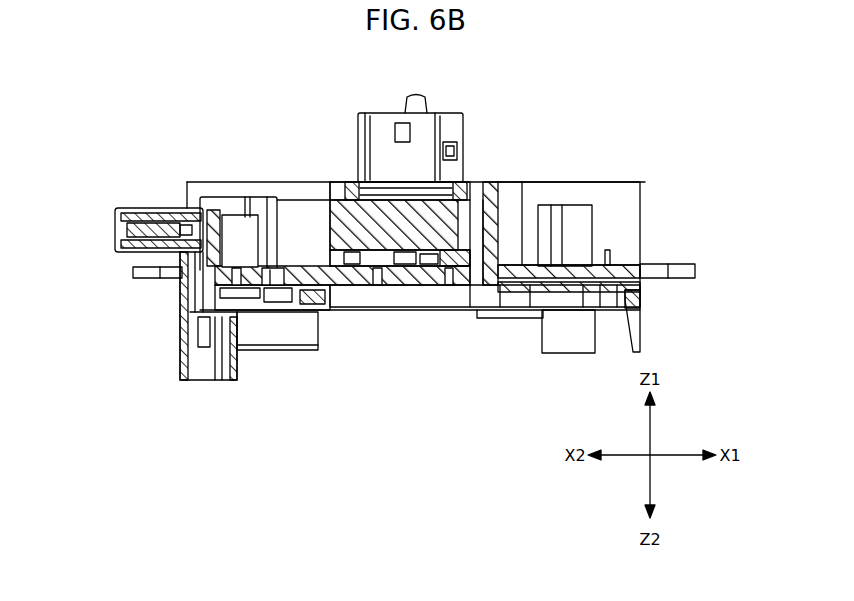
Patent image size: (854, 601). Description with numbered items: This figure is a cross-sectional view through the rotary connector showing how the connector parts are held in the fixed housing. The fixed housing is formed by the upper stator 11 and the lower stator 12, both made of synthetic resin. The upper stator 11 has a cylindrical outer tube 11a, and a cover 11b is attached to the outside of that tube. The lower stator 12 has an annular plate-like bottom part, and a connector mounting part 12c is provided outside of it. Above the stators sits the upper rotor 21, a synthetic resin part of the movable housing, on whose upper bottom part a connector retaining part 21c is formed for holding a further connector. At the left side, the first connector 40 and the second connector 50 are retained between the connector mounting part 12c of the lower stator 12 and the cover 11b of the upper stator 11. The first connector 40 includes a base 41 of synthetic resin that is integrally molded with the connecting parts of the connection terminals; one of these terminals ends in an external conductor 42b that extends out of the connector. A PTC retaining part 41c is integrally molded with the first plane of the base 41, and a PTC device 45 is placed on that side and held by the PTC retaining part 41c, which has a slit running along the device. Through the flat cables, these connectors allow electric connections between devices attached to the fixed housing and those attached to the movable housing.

The upper stator 11 is at (492, 182).
The cylindrical outer tube 11a is at (630, 215).
The cover 11b is at (278, 262).
The lower stator 12 is at (518, 282).
The connector mounting part 12c is at (281, 312).
The upper rotor 21 is at (410, 116).
The connector retaining part 21c is at (385, 128).
The first connector 40 is at (153, 291).
The base 41 is at (195, 283).
The PTC retaining part 41c is at (153, 218).
The external conductor 42b is at (197, 343).
The PTC device 45 is at (172, 230).
The second connector 50 is at (242, 303).